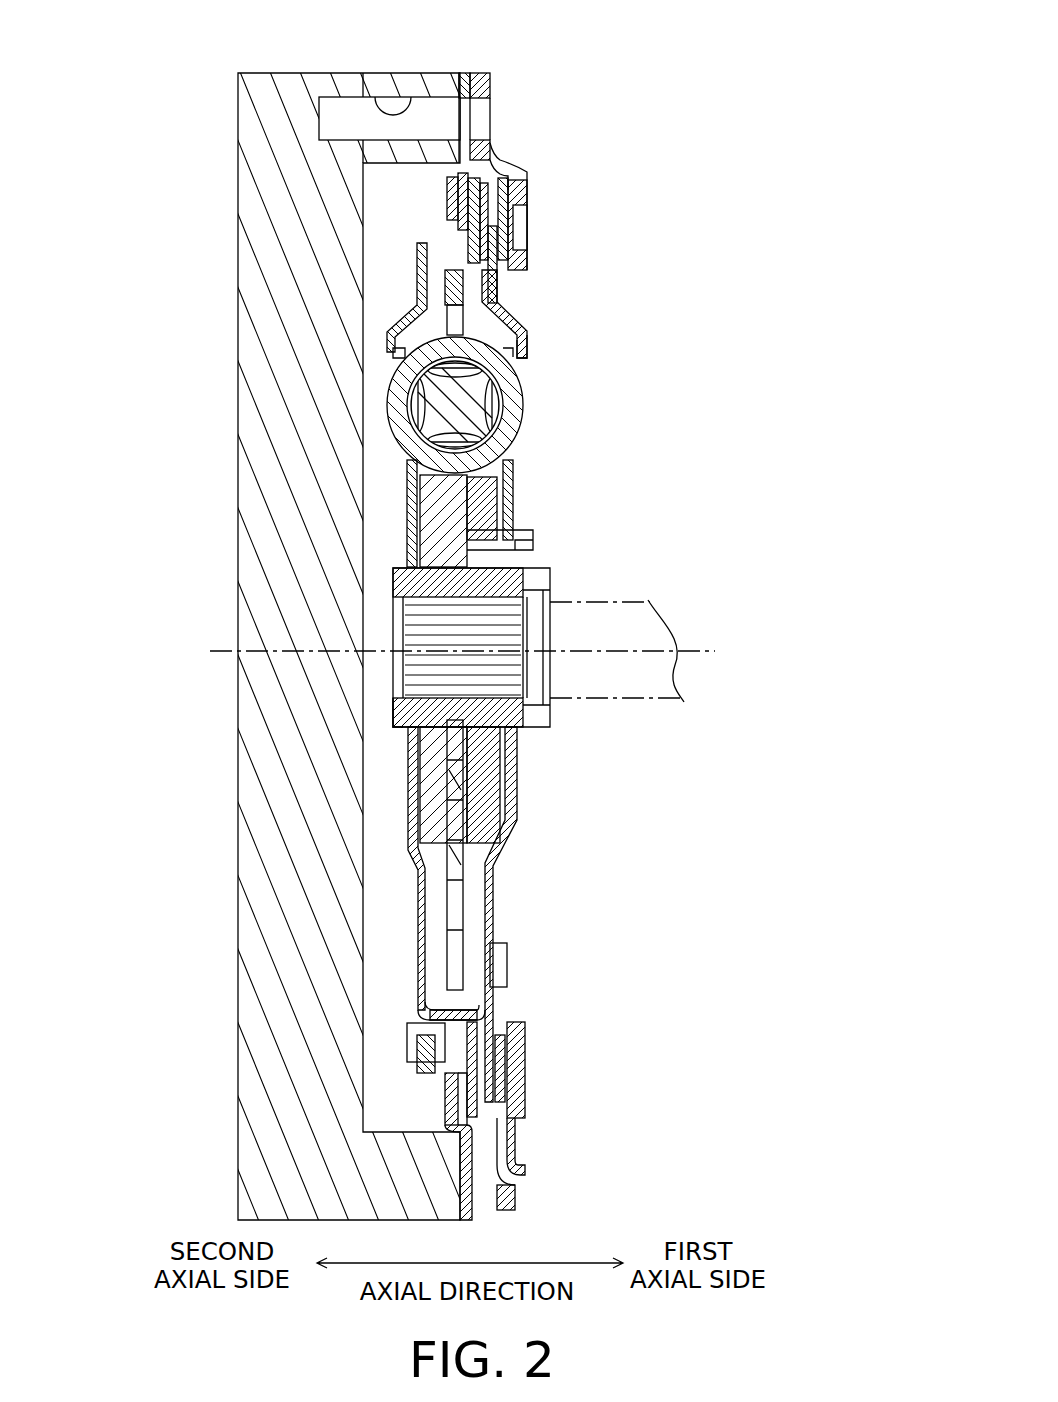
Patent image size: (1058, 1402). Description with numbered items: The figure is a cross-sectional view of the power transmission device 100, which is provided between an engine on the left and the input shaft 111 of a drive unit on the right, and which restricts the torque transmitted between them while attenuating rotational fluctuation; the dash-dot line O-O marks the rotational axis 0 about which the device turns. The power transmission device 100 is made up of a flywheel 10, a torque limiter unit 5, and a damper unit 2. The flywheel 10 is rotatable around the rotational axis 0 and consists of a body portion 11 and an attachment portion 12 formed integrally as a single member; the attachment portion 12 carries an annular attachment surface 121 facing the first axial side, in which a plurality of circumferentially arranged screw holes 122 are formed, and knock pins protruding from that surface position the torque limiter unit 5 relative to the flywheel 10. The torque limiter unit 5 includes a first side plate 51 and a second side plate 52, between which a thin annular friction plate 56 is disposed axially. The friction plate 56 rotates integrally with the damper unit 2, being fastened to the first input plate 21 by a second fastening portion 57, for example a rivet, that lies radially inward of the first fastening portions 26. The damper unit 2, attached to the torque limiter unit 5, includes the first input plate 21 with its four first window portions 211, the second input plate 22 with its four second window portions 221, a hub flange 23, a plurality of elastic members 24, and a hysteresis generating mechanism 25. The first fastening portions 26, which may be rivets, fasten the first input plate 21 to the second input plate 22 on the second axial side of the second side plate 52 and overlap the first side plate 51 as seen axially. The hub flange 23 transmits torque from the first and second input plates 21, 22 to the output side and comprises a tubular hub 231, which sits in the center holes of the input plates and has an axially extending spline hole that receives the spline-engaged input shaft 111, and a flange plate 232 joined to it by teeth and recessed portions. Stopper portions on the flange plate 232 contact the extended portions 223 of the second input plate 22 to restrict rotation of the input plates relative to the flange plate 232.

The power transmission device 100 is at (735, 95).
The flywheel 10 is at (245, 73).
The body portion 11 is at (245, 190).
The attachment portion 12 is at (430, 73).
The attachment surface 121 is at (478, 73).
The screw holes 122 is at (405, 112).
The torque limiter unit 5 is at (548, 180).
The damper unit 2 is at (620, 365).
The first input plate 21 is at (523, 330).
The first window portions 211 is at (525, 340).
The second input plate 22 is at (414, 281).
The second window portions 221 is at (392, 345).
The elastic members 24 is at (515, 408).
The hysteresis generating mechanism 25 is at (490, 490).
The hub flange 23 is at (550, 565).
The flange plate 232 is at (445, 510).
The hub 231 is at (395, 715).
The input shaft 111 is at (650, 605).
The rotational axis 0 is at (457, 653).
The second fastening portion 57 is at (507, 965).
The friction plate 56 is at (500, 1000).
The first fastening portions 26 is at (412, 1042).
The extended portions 223 is at (510, 1070).
The second side plate 52 is at (445, 1090).
The first side plate 51 is at (527, 1108).